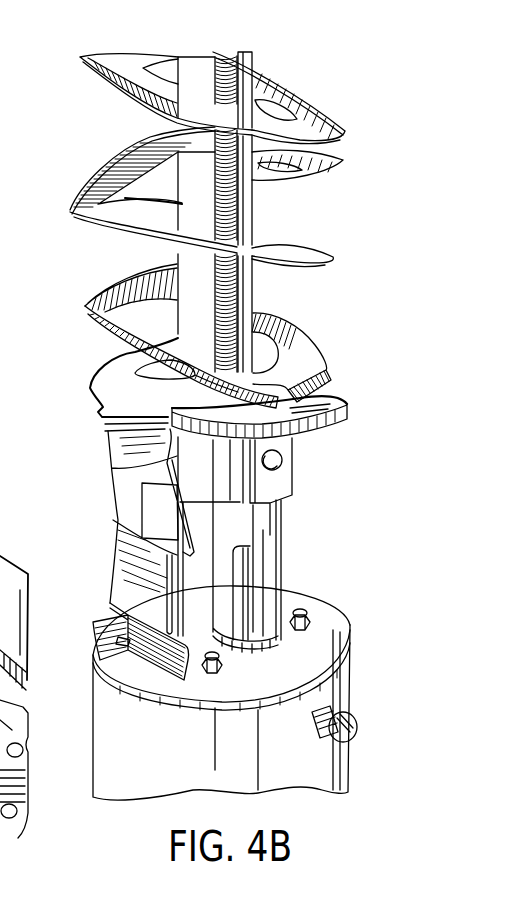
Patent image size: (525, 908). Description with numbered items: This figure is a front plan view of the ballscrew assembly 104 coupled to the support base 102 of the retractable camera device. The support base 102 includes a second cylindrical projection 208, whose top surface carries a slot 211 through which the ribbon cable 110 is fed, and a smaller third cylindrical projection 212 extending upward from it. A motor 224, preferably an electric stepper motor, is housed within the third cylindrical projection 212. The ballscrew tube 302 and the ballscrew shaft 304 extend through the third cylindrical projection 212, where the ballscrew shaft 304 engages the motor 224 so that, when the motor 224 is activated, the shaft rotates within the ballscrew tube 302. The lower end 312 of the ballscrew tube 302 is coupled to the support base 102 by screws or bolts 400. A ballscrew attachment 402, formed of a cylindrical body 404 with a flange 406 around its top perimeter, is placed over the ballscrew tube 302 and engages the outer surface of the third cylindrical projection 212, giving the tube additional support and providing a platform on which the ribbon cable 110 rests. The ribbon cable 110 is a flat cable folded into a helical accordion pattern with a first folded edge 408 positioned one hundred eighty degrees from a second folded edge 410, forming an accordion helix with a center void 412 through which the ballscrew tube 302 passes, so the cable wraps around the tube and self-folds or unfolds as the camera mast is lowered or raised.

The support base 102 is at (386, 638).
The ballscrew assembly 104 is at (274, 224).
The ribbon cable 110 is at (110, 57).
The second cylindrical projection 208 is at (347, 675).
The slot 211 is at (175, 690).
The third cylindrical projection 212 is at (266, 531).
The motor 224 is at (262, 580).
The ballscrew tube 302 is at (256, 292).
The ballscrew shaft 304 is at (240, 60).
The lower end 312 is at (312, 396).
The screws or bolts 400 is at (281, 462).
The ballscrew attachment 402 is at (348, 411).
The cylindrical body 404 is at (286, 490).
The flange 406 is at (112, 456).
The first folded edge 408 is at (342, 159).
The second folded edge 410 is at (68, 211).
The center void 412 is at (265, 110).